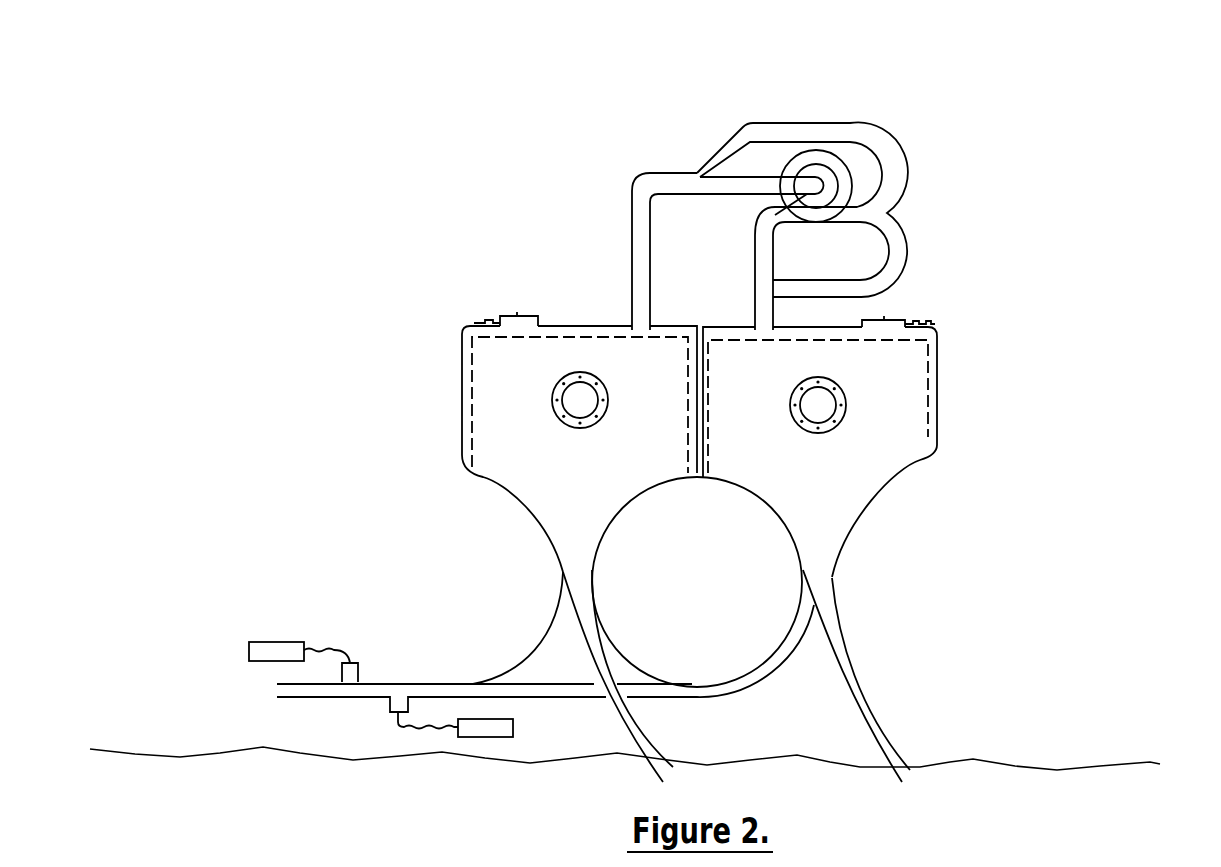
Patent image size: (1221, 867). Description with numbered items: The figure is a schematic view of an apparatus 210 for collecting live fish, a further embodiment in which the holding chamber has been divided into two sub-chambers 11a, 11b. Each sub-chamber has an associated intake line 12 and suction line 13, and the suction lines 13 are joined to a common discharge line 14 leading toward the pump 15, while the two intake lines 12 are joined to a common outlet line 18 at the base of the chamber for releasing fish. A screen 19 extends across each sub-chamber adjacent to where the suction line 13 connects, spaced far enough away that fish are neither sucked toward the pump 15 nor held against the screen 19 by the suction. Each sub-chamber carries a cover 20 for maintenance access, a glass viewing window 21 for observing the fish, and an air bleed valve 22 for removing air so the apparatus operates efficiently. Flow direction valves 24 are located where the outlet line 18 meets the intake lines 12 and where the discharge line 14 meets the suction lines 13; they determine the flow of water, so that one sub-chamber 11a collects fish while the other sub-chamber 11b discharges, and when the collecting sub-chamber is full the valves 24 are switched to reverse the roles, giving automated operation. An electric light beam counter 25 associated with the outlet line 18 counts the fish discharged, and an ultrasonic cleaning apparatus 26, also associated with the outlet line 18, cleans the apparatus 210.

The apparatus for collecting fish 210 is at (998, 193).
The sub-chamber 11a is at (895, 446).
The sub-chamber 11b is at (492, 447).
The intake line 12 is at (592, 648).
The suction line 13 is at (640, 228).
The discharge line 14 is at (855, 212).
The pump 15 is at (823, 160).
The outlet line 18 is at (478, 688).
The screen 19 is at (472, 418).
The cover 20 is at (507, 317).
The glass viewing window 21 is at (577, 396).
The air bleed valve 22 is at (473, 320).
The flow direction valve 24 is at (703, 180).
The electric light beam counter 25 is at (475, 723).
The ultrasonic cleaning apparatus 26 is at (270, 648).